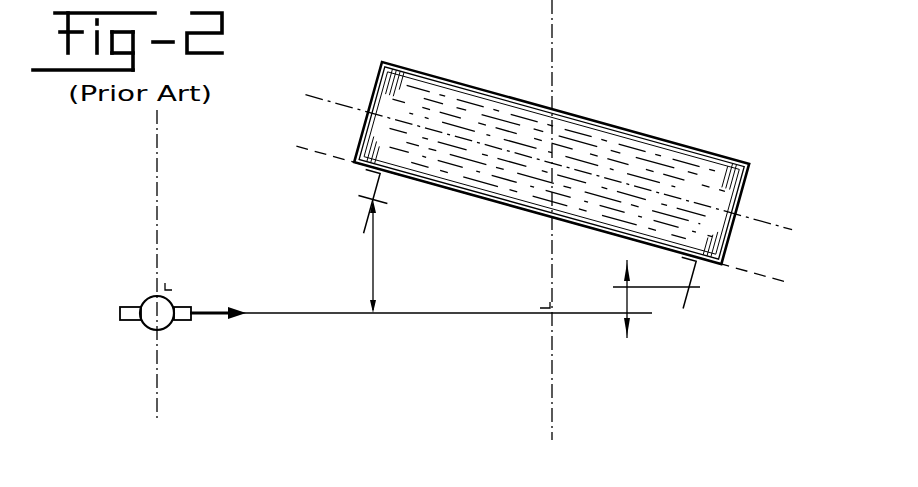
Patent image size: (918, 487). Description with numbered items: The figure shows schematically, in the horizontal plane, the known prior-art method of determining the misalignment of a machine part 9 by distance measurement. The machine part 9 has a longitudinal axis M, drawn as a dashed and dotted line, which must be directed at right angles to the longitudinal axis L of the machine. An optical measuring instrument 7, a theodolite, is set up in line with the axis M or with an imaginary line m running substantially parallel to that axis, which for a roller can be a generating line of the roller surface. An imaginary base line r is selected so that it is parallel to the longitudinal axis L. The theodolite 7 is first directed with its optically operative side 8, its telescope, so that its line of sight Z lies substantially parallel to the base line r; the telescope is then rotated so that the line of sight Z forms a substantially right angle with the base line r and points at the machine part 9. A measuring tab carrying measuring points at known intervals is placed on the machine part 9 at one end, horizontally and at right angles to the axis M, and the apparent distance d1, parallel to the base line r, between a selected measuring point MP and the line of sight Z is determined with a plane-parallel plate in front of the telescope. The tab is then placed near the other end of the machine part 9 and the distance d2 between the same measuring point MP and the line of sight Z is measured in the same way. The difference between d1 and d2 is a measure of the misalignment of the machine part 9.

The optical measuring instrument 7 is at (140, 323).
The optically operative side 8 is at (183, 322).
The machine part 9 is at (720, 166).
The line of sight Z is at (207, 309).
The longitudinal axis M is at (322, 94).
The imaginary line m is at (768, 277).
The longitudinal axis of the machine L is at (555, 40).
The imaginary base line r is at (160, 125).
The measuring point MP is at (366, 202).
The apparent distance d1 is at (375, 253).
The distance d2 is at (625, 293).